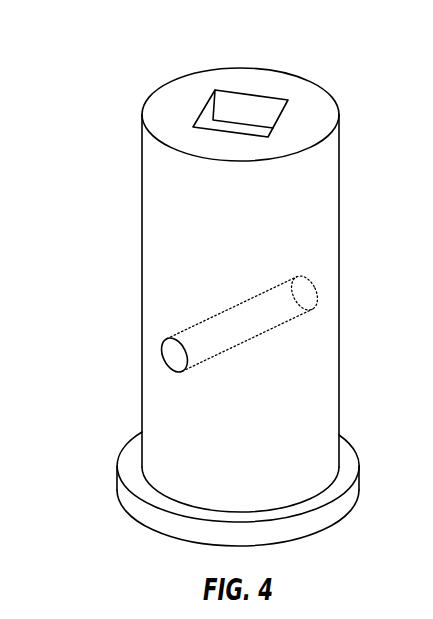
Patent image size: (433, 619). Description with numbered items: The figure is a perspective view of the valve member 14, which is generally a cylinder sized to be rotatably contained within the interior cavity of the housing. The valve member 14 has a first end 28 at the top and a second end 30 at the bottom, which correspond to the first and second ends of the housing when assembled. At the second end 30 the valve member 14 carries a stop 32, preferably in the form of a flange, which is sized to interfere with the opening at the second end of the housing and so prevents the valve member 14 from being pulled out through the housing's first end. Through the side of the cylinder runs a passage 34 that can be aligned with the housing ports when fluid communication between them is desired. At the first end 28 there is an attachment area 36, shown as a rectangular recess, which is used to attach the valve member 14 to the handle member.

The valve member 14 is at (101, 58).
The first end 28 is at (340, 106).
The second end 30 is at (347, 458).
The stop 32 is at (340, 514).
The passage 34 is at (173, 356).
The attachment area 36 is at (252, 103).